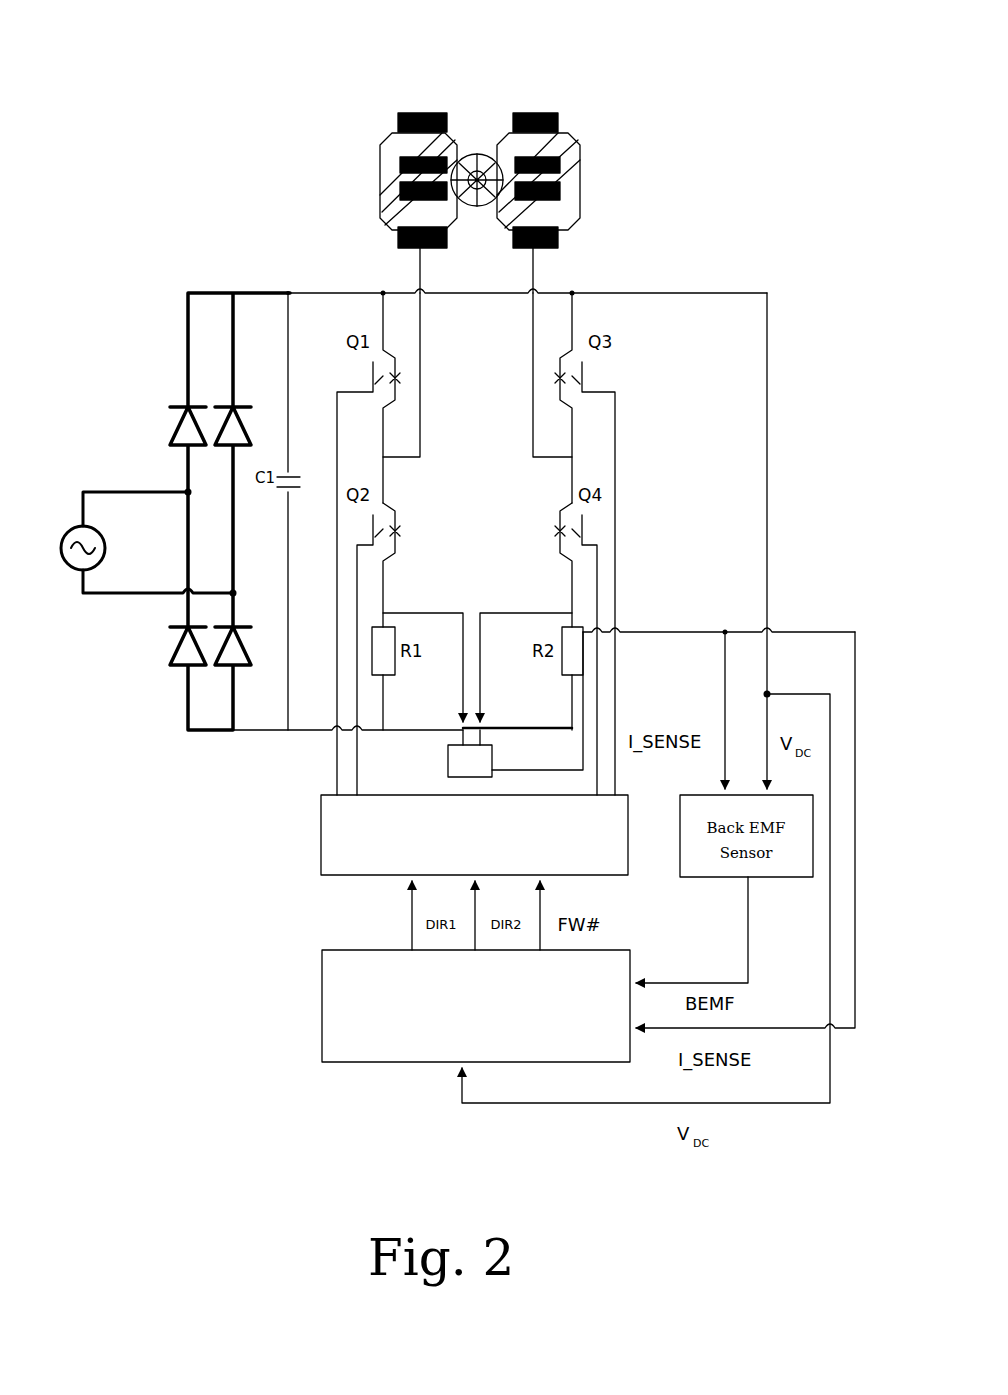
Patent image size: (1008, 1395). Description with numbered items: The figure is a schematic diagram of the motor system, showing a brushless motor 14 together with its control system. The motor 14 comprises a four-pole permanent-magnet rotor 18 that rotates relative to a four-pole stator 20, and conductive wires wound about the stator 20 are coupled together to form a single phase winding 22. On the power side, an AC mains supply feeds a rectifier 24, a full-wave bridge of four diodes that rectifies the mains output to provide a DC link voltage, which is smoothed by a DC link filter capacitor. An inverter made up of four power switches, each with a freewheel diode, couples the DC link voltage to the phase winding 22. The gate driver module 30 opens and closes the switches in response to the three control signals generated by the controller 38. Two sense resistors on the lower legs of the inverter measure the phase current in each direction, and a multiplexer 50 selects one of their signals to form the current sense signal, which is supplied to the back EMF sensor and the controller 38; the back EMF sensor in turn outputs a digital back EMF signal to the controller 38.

The brushless motor 14 is at (437, 146).
The permanent-magnet rotor 18 is at (482, 153).
The stator 20 is at (385, 185).
The phase winding 22 is at (428, 112).
The rectifier 24 is at (155, 369).
The gate driver module 30 is at (321, 846).
The controller 38 is at (330, 1012).
The multiplexer 50 is at (448, 763).